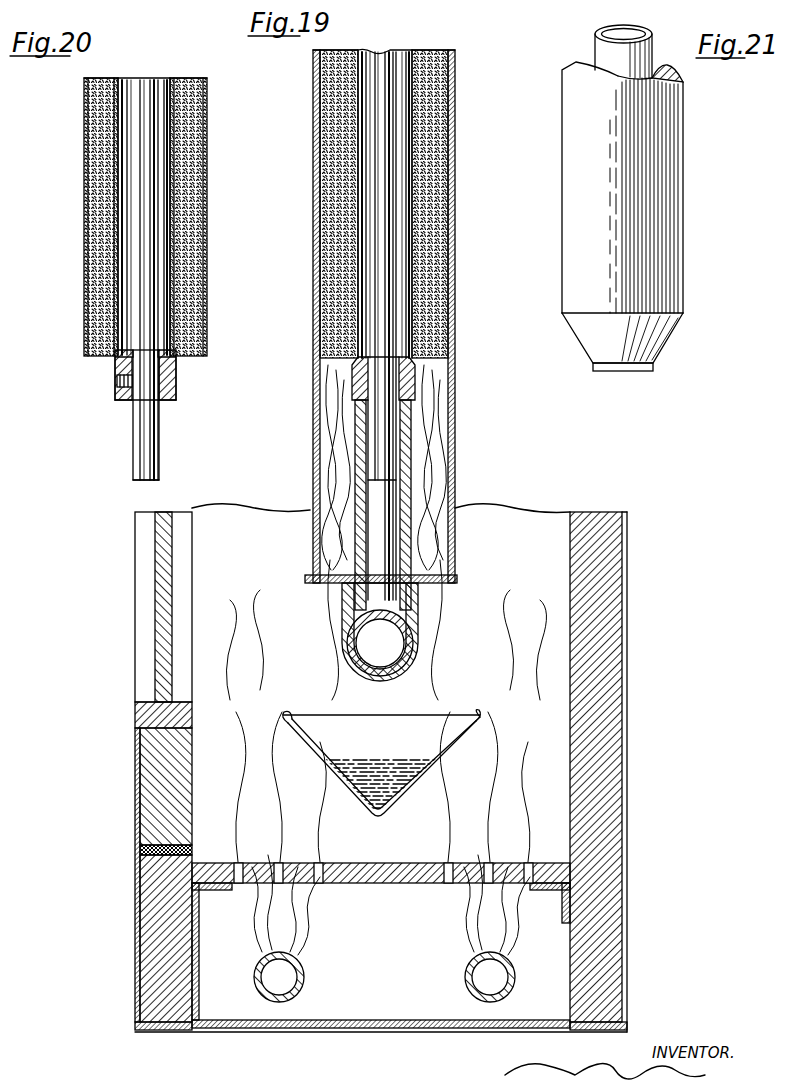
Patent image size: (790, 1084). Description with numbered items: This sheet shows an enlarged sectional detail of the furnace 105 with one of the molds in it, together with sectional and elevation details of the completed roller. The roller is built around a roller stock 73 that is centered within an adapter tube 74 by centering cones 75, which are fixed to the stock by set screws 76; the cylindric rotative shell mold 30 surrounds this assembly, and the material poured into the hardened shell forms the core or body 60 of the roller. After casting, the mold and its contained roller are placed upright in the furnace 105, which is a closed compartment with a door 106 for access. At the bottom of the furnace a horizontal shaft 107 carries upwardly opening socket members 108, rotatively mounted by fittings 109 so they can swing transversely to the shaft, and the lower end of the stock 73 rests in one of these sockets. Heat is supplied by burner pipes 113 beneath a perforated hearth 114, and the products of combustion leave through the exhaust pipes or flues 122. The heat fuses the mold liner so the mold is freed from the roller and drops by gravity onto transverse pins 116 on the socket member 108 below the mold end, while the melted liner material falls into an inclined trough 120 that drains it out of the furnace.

In FIG. 20, the cylindric rotative shell mold 30 is at (207, 207).
In FIG. 19, the cylindric rotative shell mold 30 is at (455, 80).
In FIG. 21, the cylindric rotative shell mold 30 is at (683, 86).
In FIG. 20, the core or body 60 is at (197, 78).
In FIG. 21, the core or body 60 is at (660, 80).
In FIG. 20, the roller stock 73 is at (145, 80).
In FIG. 19, the roller stock 73 is at (382, 430).
In FIG. 20, the adapter tube 74 is at (128, 80).
In FIG. 19, the adapter tube 74 is at (384, 203).
In FIG. 21, the adapter tube 74 is at (648, 42).
In FIG. 20, the centering cones 75 is at (176, 380).
In FIG. 19, the centering cones 75 is at (415, 378).
In FIG. 20, the set screws 76 is at (117, 386).
In FIG. 19, the furnace 105 is at (605, 598).
In FIG. 19, the door 106 is at (135, 632).
In FIG. 19, the horizontal shaft 107 is at (384, 645).
In FIG. 19, the socket member 108 is at (408, 490).
In FIG. 19, the fittings 109 is at (342, 605).
In FIG. 19, the burner pipes 113 is at (305, 977).
In FIG. 19, the perforated hearth 114 is at (410, 858).
In FIG. 19, the transverse pins 116 is at (457, 578).
In FIG. 19, the inclined trough 120 is at (425, 765).
In FIG. 21, the exhaust pipes or flues 122 is at (653, 340).